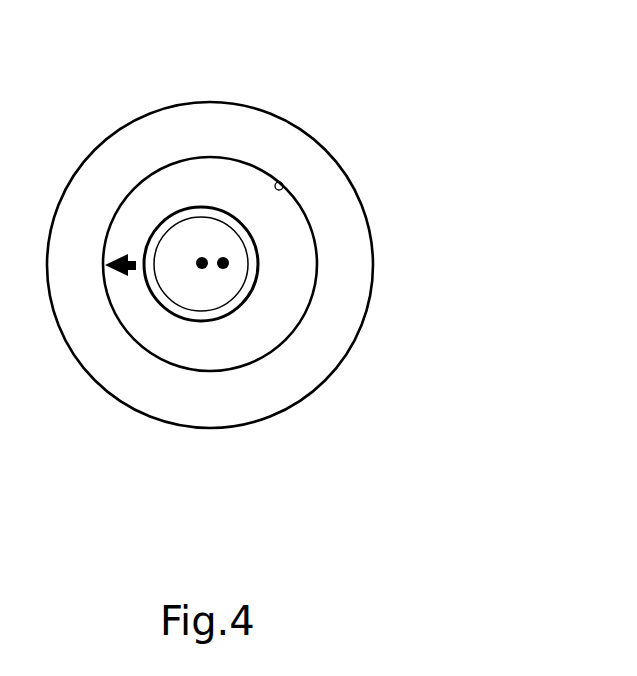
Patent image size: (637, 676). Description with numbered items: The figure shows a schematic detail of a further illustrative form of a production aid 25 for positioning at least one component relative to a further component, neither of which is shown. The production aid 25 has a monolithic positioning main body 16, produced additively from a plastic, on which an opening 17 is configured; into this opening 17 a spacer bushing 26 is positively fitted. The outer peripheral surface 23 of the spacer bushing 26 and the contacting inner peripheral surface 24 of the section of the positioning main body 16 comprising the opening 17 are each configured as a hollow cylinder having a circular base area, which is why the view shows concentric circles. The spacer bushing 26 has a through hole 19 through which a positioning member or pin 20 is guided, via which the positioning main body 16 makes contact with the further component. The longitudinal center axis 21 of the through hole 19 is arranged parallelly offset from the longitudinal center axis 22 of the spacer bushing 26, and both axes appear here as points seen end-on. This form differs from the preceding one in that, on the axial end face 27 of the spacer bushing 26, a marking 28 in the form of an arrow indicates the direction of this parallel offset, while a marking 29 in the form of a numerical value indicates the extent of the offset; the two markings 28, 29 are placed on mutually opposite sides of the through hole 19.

The positioning main body 16 is at (346, 163).
The opening 17 is at (320, 290).
The through hole 19 is at (233, 322).
The positioning member or pin 20 is at (190, 278).
The longitudinal center axis of the through hole 21 is at (205, 258).
The longitudinal center axis of the spacer bushing 22 is at (226, 261).
The outer peripheral surface of the spacer bushing 23 is at (121, 205).
The inner peripheral surface 24 is at (283, 183).
The production aid 25 is at (504, 134).
The spacer bushing 26 is at (316, 221).
The axial end face of the spacer bushing 27 is at (275, 316).
The marking in the form of an arrow 28 is at (128, 278).
The marking in the form of a numerical value 29 is at (305, 248).